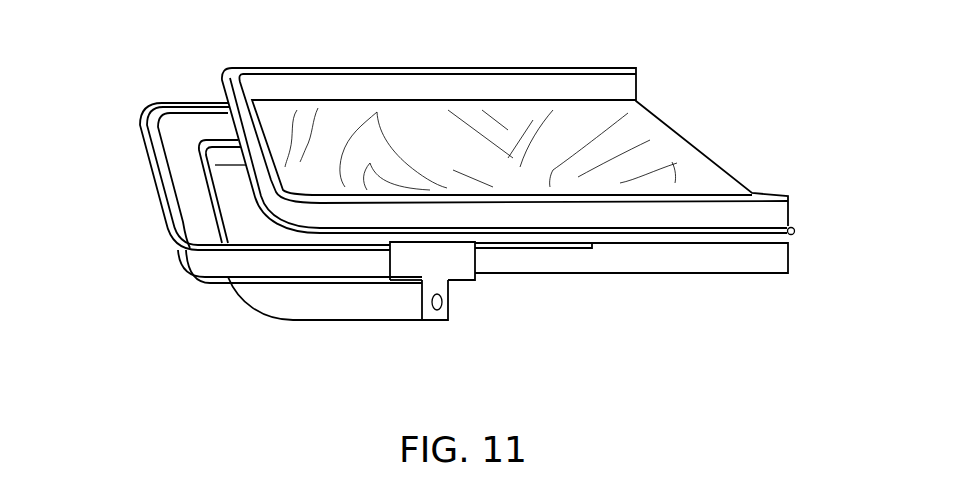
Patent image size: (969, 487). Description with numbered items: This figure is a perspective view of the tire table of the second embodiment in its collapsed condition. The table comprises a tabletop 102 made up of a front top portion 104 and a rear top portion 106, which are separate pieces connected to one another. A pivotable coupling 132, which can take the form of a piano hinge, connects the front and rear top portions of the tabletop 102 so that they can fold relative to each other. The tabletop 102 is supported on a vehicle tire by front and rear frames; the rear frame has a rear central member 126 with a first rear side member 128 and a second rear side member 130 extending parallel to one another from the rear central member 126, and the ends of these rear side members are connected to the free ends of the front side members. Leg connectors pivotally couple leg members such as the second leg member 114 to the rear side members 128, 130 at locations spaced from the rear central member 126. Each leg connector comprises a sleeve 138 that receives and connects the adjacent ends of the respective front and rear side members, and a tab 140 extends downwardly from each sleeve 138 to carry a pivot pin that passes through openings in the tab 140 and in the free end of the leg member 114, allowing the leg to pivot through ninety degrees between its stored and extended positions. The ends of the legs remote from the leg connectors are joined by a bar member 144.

The tabletop 102 is at (703, 240).
The front top portion 104 is at (648, 160).
The rear top portion 106 is at (156, 230).
The second leg member 114 is at (363, 298).
The rear central member 126 is at (153, 190).
The first rear side member 128 is at (190, 103).
The second rear side member 130 is at (250, 288).
The pivotable coupling 132 is at (796, 232).
The sleeve 138 is at (478, 272).
The tab 140 is at (449, 284).
The bar member 144 is at (222, 198).